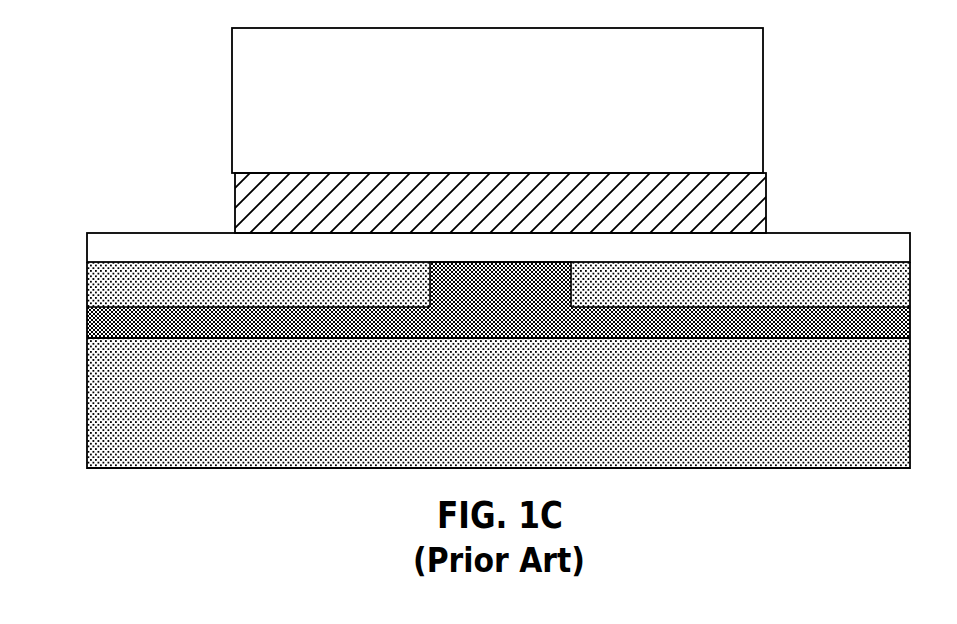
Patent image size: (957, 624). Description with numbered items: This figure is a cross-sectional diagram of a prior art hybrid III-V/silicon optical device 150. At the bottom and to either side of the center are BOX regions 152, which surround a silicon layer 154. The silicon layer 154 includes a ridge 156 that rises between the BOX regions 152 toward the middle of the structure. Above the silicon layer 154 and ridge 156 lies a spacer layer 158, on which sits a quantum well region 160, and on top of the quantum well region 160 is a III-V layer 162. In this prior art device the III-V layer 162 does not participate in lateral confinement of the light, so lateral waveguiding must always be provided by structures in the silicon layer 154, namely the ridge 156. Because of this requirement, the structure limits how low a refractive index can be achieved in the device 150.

The prior art optical device 150 is at (498, 265).
The BOX regions 152 is at (498, 365).
The silicon layer 154 is at (498, 322).
The ridge 156 is at (500, 284).
The spacer layer 158 is at (498, 247).
The quantum well region 160 is at (500, 203).
The III-V layer 162 is at (497, 100).